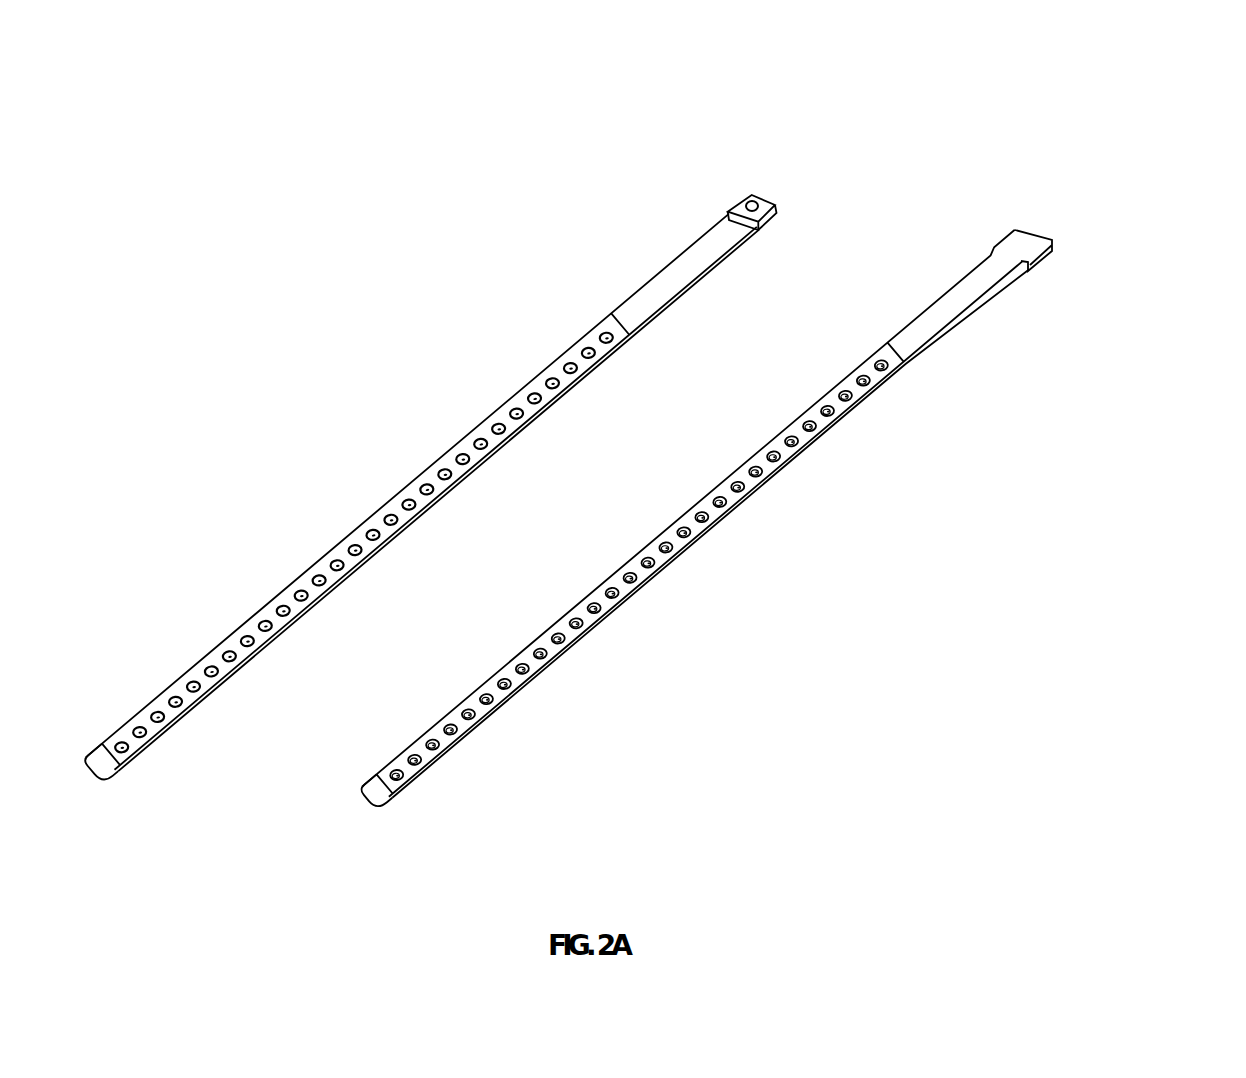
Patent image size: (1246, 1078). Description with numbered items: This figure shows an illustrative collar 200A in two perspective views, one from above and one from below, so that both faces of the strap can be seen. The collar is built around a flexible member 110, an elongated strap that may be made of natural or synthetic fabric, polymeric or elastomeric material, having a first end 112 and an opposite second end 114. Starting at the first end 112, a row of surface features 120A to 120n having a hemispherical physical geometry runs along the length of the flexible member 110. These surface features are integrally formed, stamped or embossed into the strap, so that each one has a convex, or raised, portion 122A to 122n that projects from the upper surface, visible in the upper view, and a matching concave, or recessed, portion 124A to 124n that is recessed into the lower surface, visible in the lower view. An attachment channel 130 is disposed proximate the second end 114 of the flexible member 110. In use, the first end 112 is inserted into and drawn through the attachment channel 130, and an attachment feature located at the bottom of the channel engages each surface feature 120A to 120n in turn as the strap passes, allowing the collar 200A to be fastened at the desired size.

The illustrative collar 200A is at (1144, 62).
The flexible member 110 is at (659, 269).
The first end 112 is at (96, 782).
The second end 114 is at (777, 214).
The surface feature 120A is at (131, 760).
The surface feature 120n is at (618, 352).
The convex portion 122A is at (118, 741).
The convex portion 122n is at (606, 330).
The concave portion 124A is at (393, 770).
The concave portion 124n is at (878, 362).
The attachment channel 130 is at (747, 194).